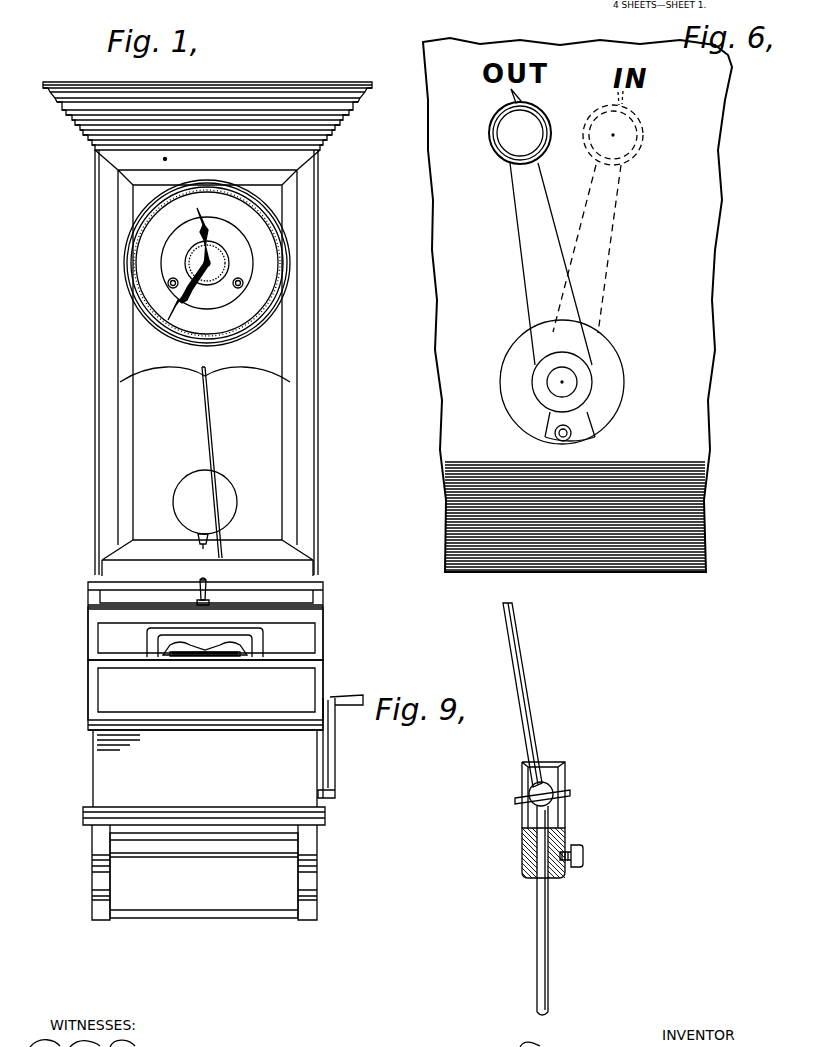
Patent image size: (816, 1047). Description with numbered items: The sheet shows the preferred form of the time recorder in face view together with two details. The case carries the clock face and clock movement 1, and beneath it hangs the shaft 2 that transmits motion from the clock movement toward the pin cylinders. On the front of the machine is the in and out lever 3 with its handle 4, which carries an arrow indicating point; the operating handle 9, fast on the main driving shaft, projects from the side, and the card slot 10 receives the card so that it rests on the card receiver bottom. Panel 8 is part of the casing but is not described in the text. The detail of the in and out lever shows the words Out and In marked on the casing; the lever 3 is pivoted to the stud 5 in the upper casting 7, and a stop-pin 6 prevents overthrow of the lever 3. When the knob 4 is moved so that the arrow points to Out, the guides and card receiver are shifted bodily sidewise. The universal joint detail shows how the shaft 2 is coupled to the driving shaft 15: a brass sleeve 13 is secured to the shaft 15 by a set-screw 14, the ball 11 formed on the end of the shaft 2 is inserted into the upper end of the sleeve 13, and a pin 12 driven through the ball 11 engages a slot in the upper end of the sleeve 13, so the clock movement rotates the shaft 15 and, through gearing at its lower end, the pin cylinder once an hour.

In FIG. 1, the clock face and clock movement 1 is at (270, 278).
In FIG. 1, the shaft 2 is at (216, 505).
In FIG. 9, the shaft 2 is at (523, 697).
In FIG. 1, the in and out lever 3 is at (209, 603).
In FIG. 6, the in and out lever 3 is at (523, 233).
In FIG. 1, the handle 4 is at (207, 583).
In FIG. 6, the handle 4 is at (510, 135).
In FIG. 6, the stud 5 is at (570, 383).
In FIG. 6, the stop-pin 6 is at (575, 440).
In FIG. 1, the upper casting 7 is at (316, 632).
In FIG. 6, the upper casting 7 is at (503, 416).
In FIG. 1, the lower panel 8 is at (110, 690).
In FIG. 1, the operating handle 9 is at (335, 755).
In FIG. 1, the card slot 10 is at (208, 657).
In FIG. 9, the ball 11 is at (548, 790).
In FIG. 9, the pin 12 is at (567, 797).
In FIG. 9, the brass sleeve 13 is at (525, 848).
In FIG. 9, the set-screw 14 is at (569, 862).
In FIG. 9, the driving shaft 15 is at (548, 932).